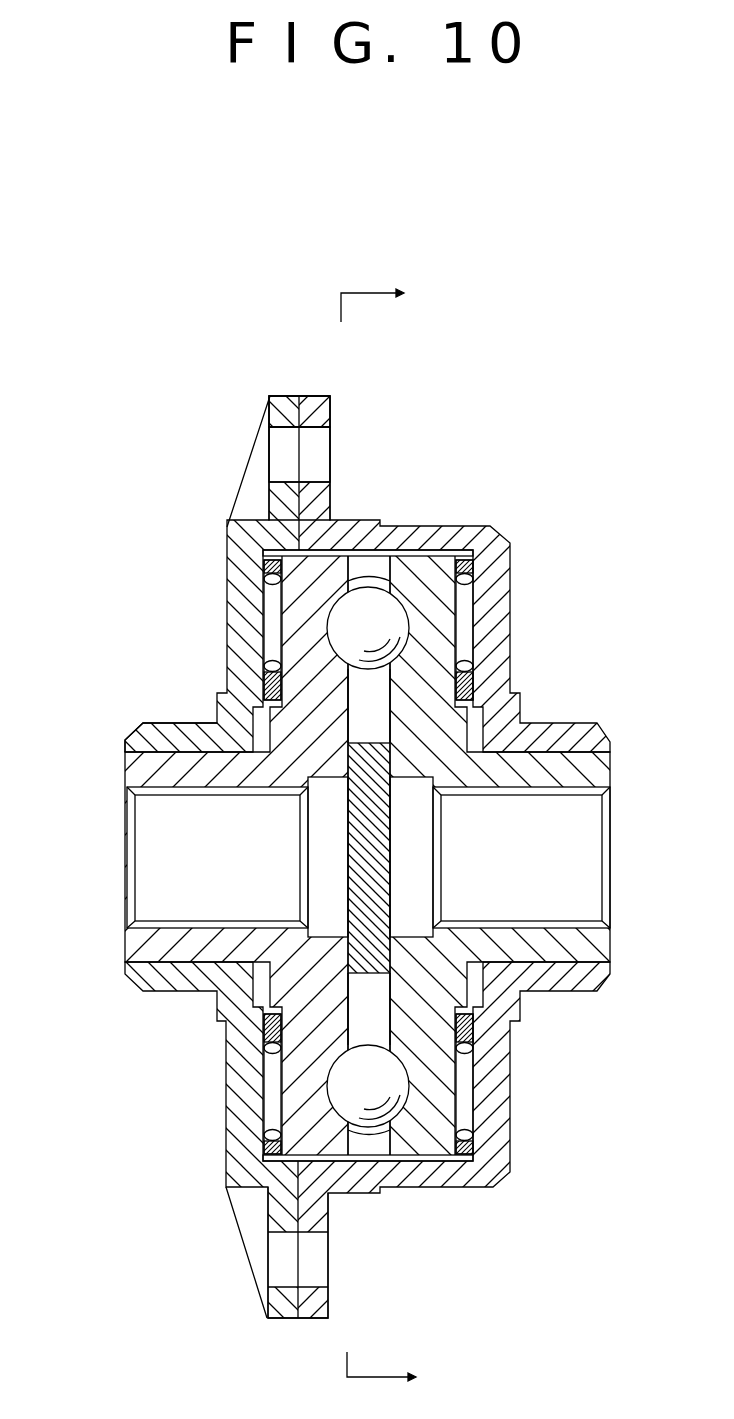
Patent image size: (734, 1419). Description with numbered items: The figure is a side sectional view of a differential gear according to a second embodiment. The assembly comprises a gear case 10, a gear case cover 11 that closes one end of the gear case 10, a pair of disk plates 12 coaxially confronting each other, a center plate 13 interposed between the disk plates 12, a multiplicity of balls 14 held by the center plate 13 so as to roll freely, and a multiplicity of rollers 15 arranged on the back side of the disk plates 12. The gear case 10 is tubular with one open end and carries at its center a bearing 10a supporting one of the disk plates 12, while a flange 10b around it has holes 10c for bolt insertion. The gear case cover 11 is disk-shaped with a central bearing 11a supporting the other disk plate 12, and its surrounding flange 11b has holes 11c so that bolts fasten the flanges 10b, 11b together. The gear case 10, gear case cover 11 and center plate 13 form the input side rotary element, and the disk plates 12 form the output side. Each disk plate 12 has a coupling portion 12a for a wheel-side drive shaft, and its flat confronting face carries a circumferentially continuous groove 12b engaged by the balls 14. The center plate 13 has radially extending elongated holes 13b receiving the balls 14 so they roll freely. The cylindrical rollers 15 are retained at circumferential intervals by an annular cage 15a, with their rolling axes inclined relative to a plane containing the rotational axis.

The gear case 10 is at (488, 522).
The bearing 10a is at (585, 992).
The flange 10b is at (330, 497).
The holes 10c is at (327, 440).
The gear case cover 11 is at (400, 836).
The bearing 11a is at (143, 722).
The flange 11b is at (270, 502).
The holes 11c is at (277, 453).
The disk plates 12 is at (252, 682).
The coupling portion 12a is at (148, 862).
The grooves 12b is at (403, 583).
The center plate 13 is at (388, 757).
The elongated holes 13b is at (385, 692).
The balls 14 is at (337, 630).
The rollers 15 is at (265, 600).
The cage 15a is at (262, 552).